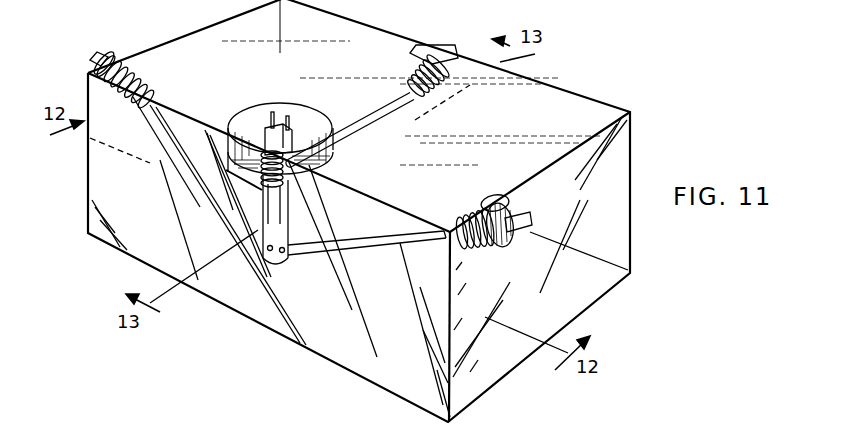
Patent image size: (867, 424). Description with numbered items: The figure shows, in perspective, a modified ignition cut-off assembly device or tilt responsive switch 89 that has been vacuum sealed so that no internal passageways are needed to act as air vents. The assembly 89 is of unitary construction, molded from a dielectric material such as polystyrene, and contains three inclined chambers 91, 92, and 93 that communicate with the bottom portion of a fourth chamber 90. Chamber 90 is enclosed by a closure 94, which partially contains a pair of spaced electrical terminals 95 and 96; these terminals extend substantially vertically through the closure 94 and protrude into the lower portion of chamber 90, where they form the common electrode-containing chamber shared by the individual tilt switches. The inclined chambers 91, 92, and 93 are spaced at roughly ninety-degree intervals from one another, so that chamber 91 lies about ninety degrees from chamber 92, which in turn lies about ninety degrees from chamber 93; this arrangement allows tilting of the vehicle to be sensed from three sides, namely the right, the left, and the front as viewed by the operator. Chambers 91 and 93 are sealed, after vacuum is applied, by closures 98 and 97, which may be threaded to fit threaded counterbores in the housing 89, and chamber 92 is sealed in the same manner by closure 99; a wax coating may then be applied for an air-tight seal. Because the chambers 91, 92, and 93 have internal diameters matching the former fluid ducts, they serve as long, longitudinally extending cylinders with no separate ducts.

The ignition cut-off assembly 89 is at (606, 97).
The fourth chamber 90 is at (283, 232).
The inclined chamber 91 is at (216, 195).
The inclined chamber 92 is at (387, 128).
The inclined chamber 93 is at (380, 237).
The closure 94 is at (262, 132).
The electrical terminal 95 is at (274, 116).
The electrical terminal 96 is at (290, 118).
The closure 97 is at (119, 63).
The closure 98 is at (514, 207).
The closure 99 is at (440, 47).